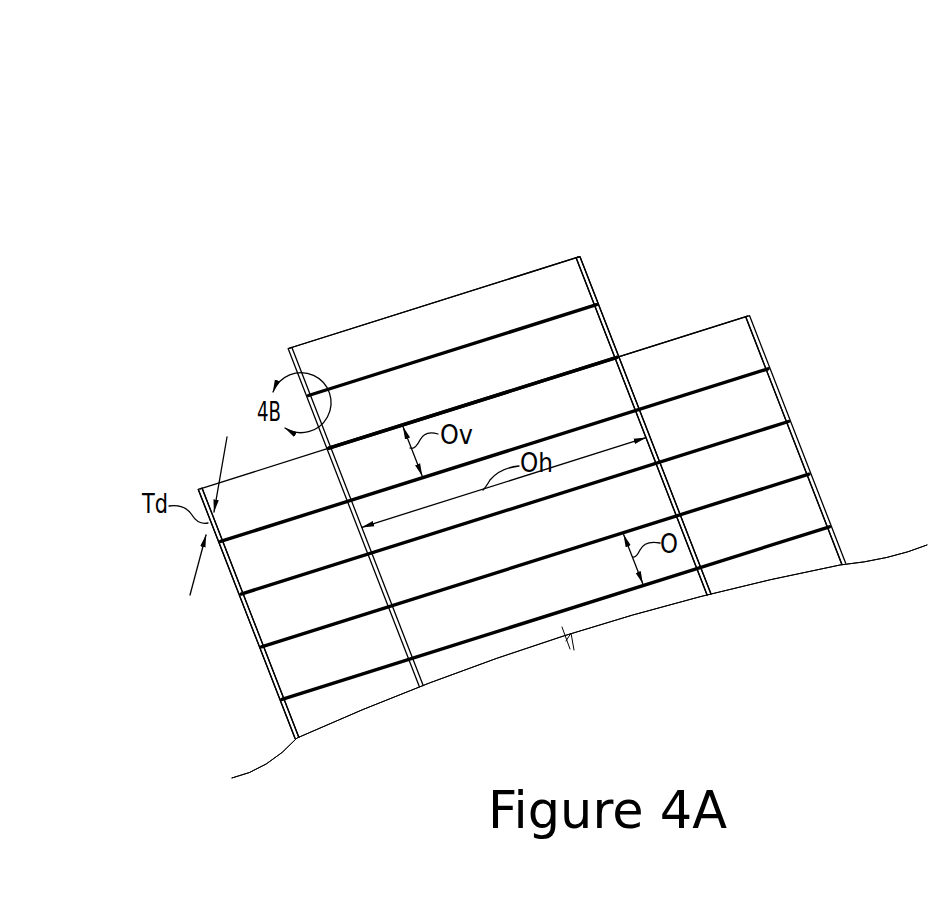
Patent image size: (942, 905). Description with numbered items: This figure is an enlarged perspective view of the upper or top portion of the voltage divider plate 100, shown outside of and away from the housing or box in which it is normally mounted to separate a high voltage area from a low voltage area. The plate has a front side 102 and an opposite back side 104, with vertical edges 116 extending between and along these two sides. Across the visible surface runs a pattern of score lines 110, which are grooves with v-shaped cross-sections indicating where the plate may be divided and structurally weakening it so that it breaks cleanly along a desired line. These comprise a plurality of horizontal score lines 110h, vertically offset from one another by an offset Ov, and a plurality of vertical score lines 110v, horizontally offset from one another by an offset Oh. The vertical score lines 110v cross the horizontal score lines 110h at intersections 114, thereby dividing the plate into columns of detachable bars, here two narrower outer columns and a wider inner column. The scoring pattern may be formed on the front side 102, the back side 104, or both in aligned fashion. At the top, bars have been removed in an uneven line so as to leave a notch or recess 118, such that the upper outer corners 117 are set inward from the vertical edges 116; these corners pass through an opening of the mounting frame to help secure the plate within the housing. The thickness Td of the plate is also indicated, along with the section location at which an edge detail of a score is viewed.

The voltage divider plate 100 is at (180, 229).
The front side 102 is at (342, 614).
The back side 104 is at (255, 642).
The score lines 110 is at (469, 343).
The horizontal score lines 110h is at (543, 380).
The vertical score lines 110v is at (672, 500).
The intersections 114 is at (638, 410).
The vertical edges 116 is at (196, 484).
The upper outer corners 117 is at (285, 338).
The notch or recess 118 is at (750, 227).